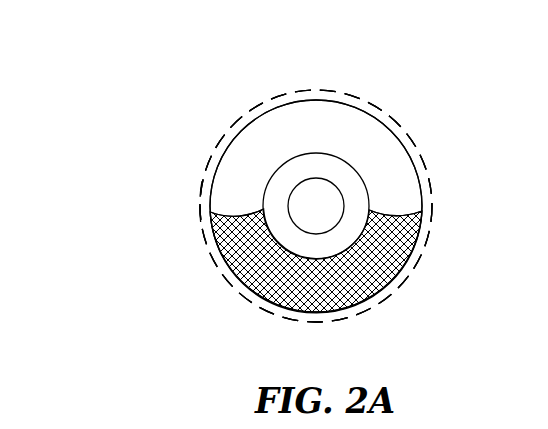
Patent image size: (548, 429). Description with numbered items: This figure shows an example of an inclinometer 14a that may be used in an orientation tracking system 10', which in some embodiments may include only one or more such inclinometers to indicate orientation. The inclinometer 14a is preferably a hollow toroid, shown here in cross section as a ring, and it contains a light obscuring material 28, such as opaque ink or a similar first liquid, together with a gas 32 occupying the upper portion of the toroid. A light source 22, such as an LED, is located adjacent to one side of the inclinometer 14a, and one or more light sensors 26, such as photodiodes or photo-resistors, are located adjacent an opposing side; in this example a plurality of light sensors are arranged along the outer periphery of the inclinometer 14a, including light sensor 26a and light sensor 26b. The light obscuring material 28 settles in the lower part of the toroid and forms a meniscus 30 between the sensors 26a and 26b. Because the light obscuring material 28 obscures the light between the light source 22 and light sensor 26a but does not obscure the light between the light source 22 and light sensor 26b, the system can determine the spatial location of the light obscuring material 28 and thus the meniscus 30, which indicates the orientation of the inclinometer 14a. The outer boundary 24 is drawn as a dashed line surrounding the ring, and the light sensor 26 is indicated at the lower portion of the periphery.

The orientation tracking system 10' is at (234, 169).
The inclinometer 14a is at (375, 116).
The light source 22 is at (330, 217).
The outer sheath 24 is at (258, 104).
The light sensor 26 is at (257, 307).
The light sensor 26a is at (203, 226).
The light sensor 26b is at (202, 181).
The light obscuring material 28 is at (235, 276).
The meniscus 30 is at (235, 215).
The gas 32 is at (314, 123).